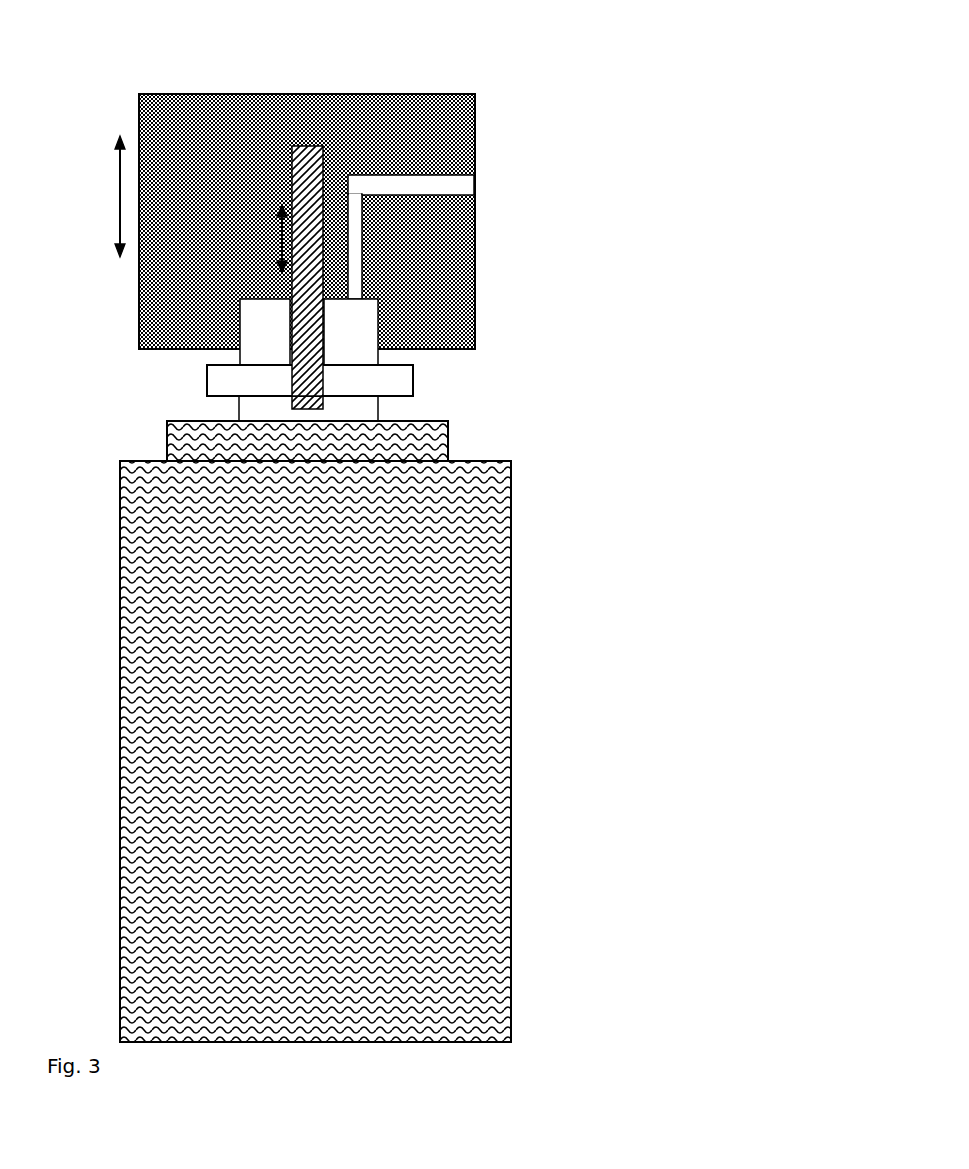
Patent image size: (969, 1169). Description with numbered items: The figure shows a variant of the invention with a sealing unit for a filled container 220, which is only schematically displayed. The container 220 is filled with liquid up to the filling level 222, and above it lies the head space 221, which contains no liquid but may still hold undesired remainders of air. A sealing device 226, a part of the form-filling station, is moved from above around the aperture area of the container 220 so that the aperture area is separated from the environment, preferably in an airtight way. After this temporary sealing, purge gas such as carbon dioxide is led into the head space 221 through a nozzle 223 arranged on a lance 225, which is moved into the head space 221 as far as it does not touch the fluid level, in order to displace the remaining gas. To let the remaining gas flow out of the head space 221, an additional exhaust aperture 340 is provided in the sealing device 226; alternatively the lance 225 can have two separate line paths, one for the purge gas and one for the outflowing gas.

The container 220 is at (172, 537).
The head space 221 is at (262, 350).
The filling level 222 is at (442, 450).
The nozzle 223 is at (327, 407).
The lance 225 is at (322, 268).
The sealing device 226 is at (412, 93).
The exhaust aperture 340 is at (427, 185).